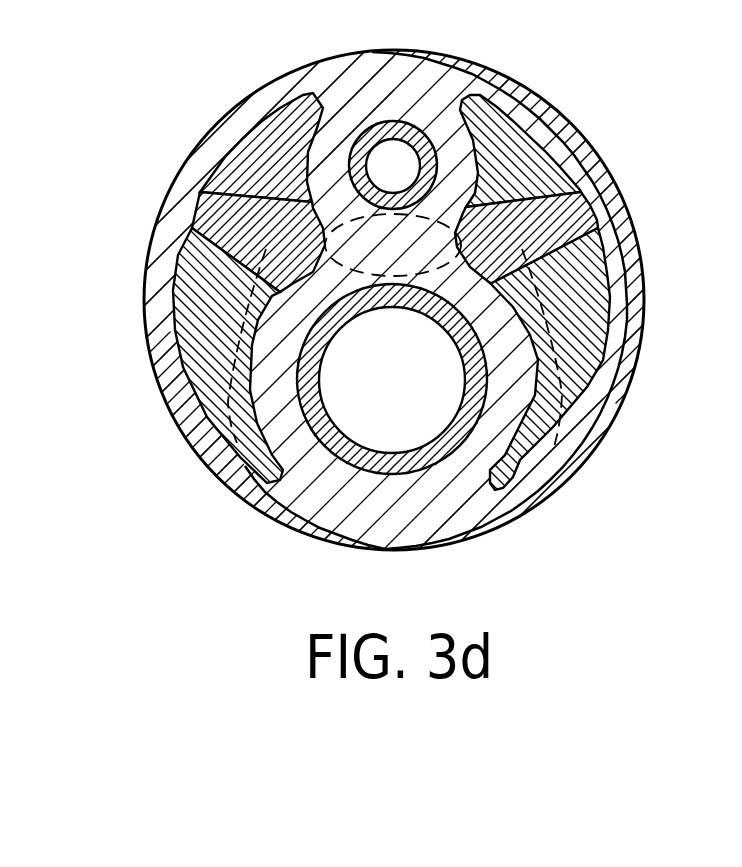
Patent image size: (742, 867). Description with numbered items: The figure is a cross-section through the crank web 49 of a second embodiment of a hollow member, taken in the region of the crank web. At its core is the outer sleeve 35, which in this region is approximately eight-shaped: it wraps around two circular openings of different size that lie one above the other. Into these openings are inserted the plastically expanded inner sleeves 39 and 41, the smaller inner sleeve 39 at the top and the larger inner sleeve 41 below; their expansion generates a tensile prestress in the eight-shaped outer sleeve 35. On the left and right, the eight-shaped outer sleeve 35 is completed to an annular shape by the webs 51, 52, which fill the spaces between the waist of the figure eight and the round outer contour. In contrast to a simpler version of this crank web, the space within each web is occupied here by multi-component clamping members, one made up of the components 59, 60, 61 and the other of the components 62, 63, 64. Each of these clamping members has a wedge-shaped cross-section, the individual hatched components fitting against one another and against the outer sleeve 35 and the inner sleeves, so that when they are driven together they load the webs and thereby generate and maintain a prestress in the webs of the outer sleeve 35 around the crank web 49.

The outer sleeve 35 is at (332, 519).
The inner sleeve 39 is at (427, 127).
The inner sleeve 41 is at (444, 450).
The crank web 49 is at (583, 482).
The web 51 is at (225, 132).
The web 52 is at (513, 97).
The clamping member component 59 is at (240, 165).
The clamping member component 60 is at (535, 168).
The clamping member component 61 is at (222, 211).
The clamping member component 62 is at (560, 213).
The clamping member component 63 is at (184, 319).
The clamping member component 64 is at (585, 321).